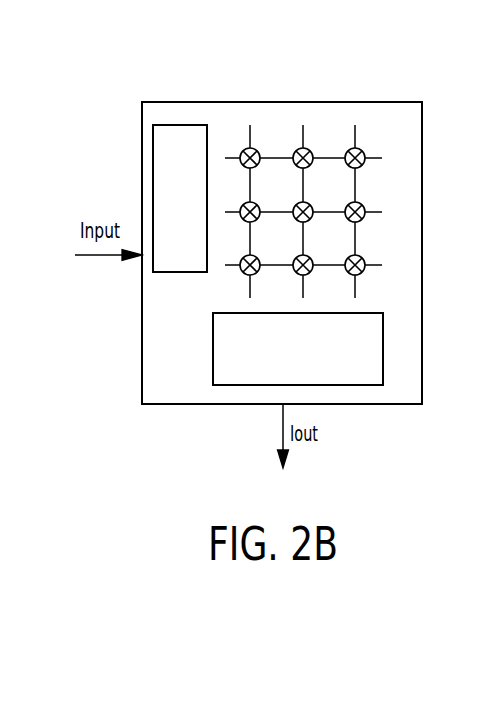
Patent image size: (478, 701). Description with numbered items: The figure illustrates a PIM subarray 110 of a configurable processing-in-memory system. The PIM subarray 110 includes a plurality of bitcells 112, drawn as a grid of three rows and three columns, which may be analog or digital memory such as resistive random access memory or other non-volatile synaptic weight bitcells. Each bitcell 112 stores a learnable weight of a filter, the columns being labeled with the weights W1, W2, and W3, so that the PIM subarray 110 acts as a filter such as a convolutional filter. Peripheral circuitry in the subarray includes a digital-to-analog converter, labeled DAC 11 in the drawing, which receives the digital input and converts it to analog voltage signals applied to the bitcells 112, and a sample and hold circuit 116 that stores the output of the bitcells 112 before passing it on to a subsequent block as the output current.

The PIM subarray 110 is at (142, 102).
The DAC (digital-to-analog converter) 11 is at (183, 125).
The bitcells 112 is at (345, 178).
The sample and hold circuit 116 is at (213, 350).
The learnable weight W1 is at (266, 144).
The learnable weight W2 is at (319, 144).
The learnable weight W3 is at (371, 144).